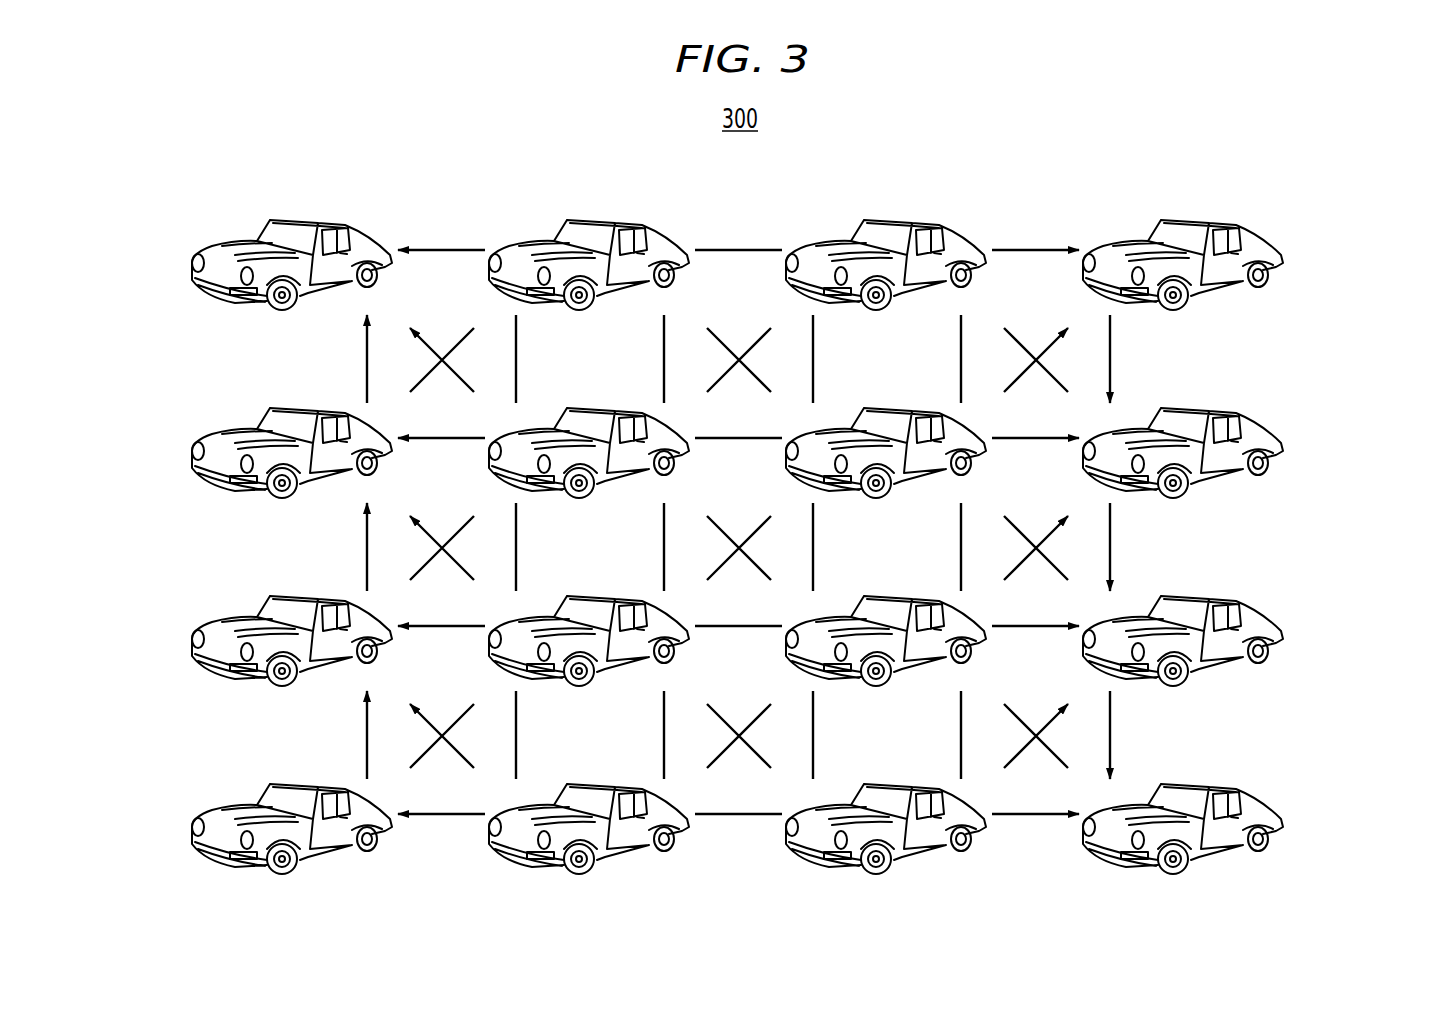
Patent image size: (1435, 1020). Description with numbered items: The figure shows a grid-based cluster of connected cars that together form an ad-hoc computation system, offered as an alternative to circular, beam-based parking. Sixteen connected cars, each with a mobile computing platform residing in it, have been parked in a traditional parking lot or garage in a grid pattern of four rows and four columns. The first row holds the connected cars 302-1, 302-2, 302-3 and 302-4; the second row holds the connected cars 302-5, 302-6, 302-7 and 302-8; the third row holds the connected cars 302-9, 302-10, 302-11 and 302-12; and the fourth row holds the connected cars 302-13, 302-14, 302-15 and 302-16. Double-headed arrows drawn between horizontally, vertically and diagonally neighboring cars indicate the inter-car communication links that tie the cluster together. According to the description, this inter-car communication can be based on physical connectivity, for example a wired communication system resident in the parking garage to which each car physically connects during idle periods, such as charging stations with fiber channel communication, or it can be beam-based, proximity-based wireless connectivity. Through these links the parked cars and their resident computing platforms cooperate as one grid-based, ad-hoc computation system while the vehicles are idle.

The connected car 302-1 is at (190, 272).
The connected car 302-2 is at (597, 220).
The connected car 302-3 is at (894, 220).
The connected car 302-4 is at (1280, 256).
The connected car 302-5 is at (190, 460).
The connected car 302-6 is at (597, 408).
The connected car 302-7 is at (894, 408).
The connected car 302-8 is at (1280, 444).
The connected car 302-9 is at (190, 648).
The connected car 302-10 is at (597, 596).
The connected car 302-11 is at (894, 596).
The connected car 302-12 is at (1280, 632).
The connected car 302-13 is at (190, 836).
The connected car 302-14 is at (597, 784).
The connected car 302-15 is at (894, 784).
The connected car 302-16 is at (1280, 820).